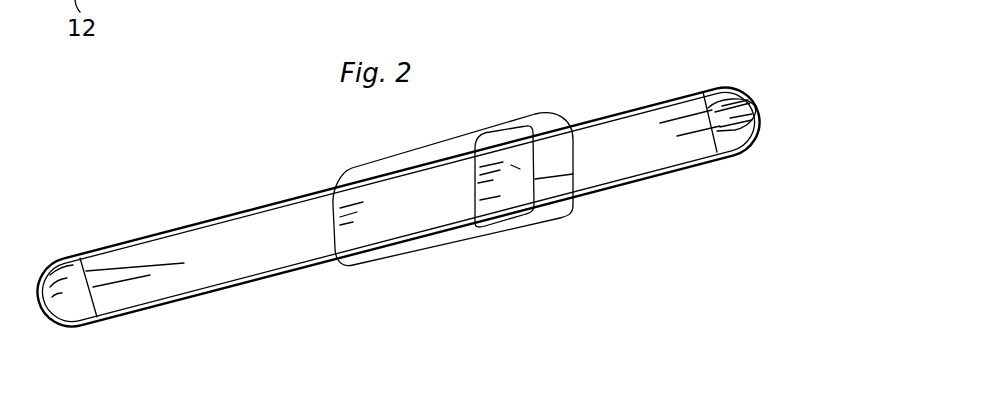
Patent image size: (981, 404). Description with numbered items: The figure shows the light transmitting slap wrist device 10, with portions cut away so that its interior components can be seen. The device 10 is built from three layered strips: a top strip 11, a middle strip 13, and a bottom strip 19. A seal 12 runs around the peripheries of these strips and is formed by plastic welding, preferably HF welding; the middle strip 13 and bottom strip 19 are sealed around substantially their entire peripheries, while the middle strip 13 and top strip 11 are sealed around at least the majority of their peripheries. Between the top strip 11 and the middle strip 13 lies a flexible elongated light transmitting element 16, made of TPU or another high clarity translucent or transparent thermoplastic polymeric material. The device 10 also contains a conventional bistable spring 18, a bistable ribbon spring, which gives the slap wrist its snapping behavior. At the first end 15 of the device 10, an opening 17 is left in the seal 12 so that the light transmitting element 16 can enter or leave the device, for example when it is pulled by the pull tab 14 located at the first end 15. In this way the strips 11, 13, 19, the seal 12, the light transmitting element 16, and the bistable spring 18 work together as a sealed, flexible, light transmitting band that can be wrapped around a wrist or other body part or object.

The light transmitting slap wrist device 10 is at (762, 42).
The top strip 11 is at (229, 260).
The seal 12 is at (85, 252).
The middle strip 13 is at (552, 189).
The pull tab 14 is at (743, 115).
The first end 15 is at (770, 85).
The flexible elongated light transmitting element 16 is at (398, 205).
The opening 17 is at (712, 92).
The bistable spring 18 is at (517, 167).
The bottom strip 19 is at (494, 203).